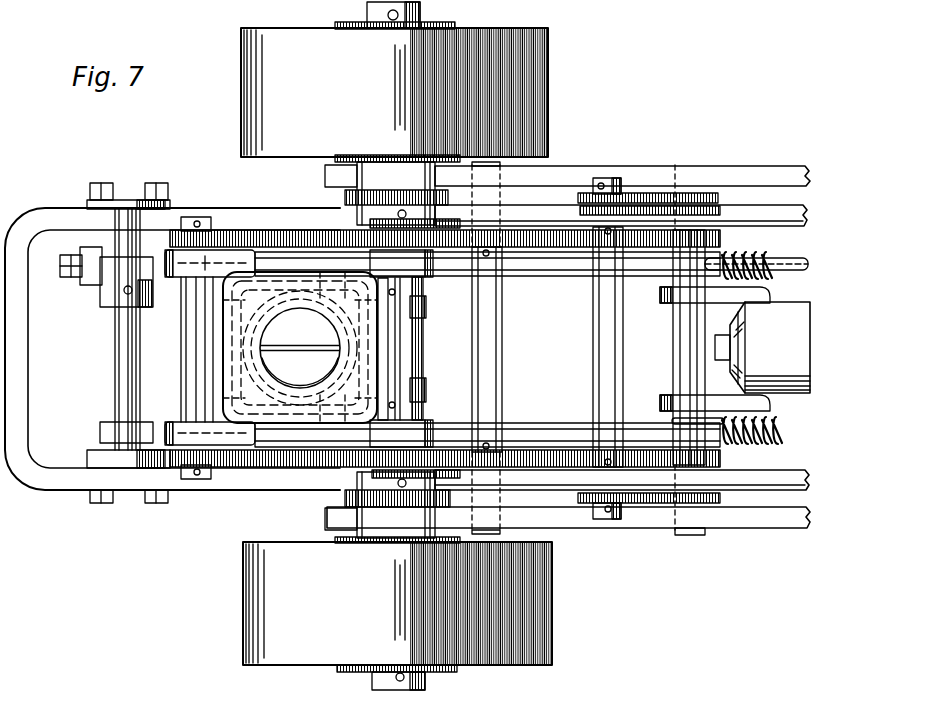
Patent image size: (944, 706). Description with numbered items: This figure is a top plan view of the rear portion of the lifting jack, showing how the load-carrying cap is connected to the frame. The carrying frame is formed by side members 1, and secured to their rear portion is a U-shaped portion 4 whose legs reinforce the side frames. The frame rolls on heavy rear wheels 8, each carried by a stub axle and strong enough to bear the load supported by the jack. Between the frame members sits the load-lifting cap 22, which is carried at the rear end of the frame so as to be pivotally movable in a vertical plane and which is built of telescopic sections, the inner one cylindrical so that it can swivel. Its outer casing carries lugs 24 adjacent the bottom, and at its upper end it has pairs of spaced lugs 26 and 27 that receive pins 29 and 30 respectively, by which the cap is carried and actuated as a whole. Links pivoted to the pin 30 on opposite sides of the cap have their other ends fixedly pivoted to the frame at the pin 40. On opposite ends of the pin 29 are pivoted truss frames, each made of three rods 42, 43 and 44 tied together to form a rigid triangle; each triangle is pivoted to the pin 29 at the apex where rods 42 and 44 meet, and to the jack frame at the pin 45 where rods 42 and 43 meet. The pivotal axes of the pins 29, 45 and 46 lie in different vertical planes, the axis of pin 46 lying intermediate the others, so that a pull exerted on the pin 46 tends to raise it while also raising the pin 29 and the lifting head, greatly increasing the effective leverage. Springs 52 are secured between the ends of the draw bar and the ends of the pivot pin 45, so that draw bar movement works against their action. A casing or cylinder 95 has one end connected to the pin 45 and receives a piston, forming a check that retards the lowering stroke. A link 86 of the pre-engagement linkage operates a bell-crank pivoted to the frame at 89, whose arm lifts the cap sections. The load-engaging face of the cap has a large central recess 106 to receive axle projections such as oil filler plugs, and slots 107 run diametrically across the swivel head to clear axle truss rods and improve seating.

The side members 1 is at (748, 165).
The U-shaped portion 4 is at (18, 363).
The rear wheels 8 is at (550, 72).
The load-lifting cap 22 is at (240, 325).
The lugs 24 is at (427, 306).
The spaced lugs 26 is at (428, 276).
The spaced lugs 27 is at (170, 280).
The pin 29 is at (419, 338).
The pin 30 is at (187, 322).
The pin 40 is at (504, 404).
The rod or link 42 is at (535, 450).
The rod or link 43 is at (635, 197).
The rod or link 44 is at (548, 470).
The pin 45 is at (673, 330).
The pin 46 is at (600, 372).
The springs 52 is at (770, 268).
The link 86 is at (583, 263).
The pivot 89 is at (117, 377).
The casing or cylinder 95 is at (790, 305).
The central recess 106 is at (284, 385).
The recesses or slots 107 is at (263, 346).